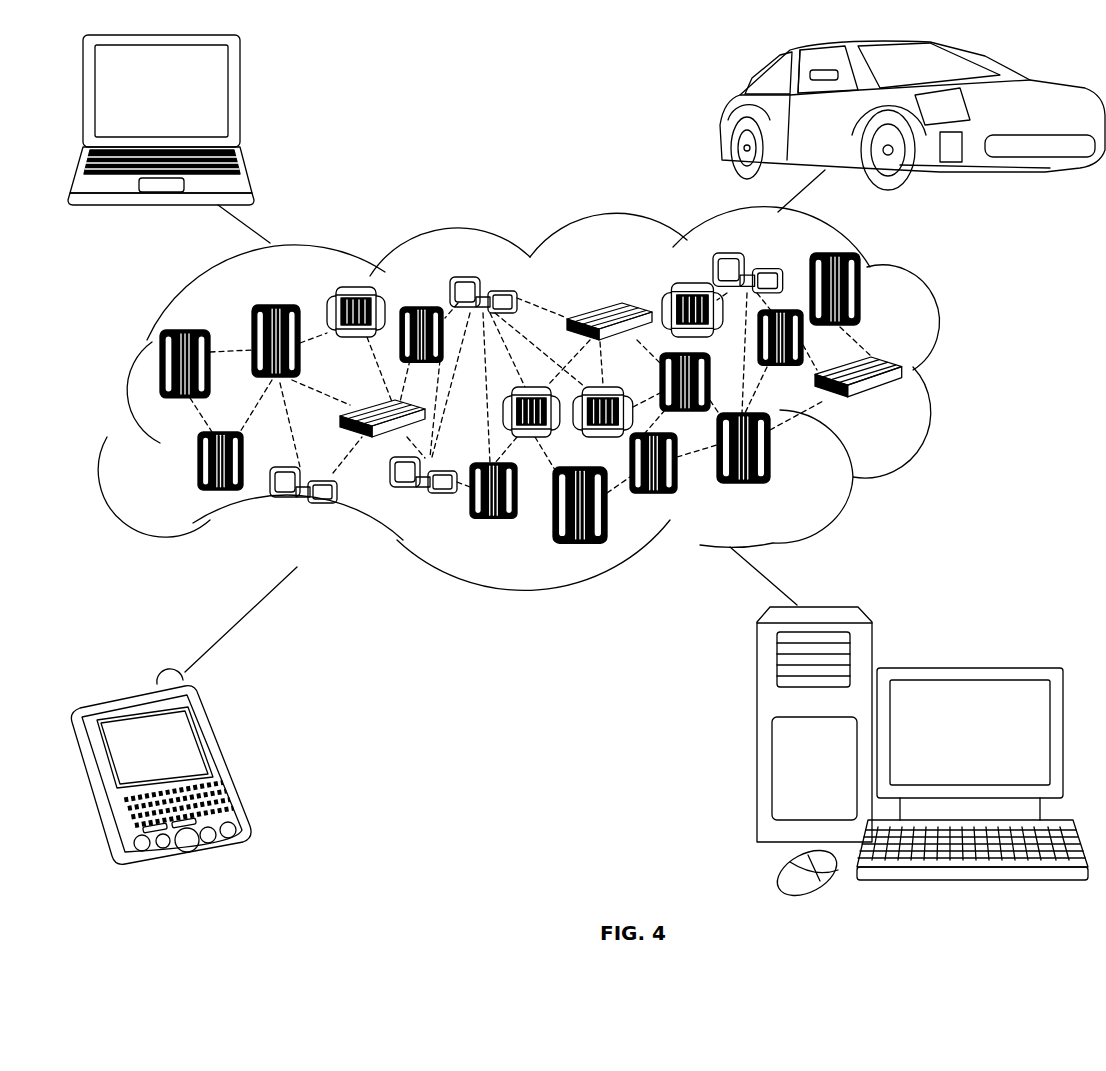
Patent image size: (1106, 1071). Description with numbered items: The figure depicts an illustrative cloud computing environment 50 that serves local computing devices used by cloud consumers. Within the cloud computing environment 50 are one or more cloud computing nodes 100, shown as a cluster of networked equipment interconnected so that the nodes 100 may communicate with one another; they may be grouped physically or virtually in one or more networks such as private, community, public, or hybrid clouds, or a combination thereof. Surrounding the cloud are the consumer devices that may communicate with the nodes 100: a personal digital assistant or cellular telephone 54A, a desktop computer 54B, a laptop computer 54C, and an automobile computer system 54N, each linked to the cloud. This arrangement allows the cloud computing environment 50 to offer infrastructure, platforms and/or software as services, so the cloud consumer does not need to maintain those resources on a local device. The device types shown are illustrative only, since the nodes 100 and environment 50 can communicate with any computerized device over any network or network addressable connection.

The cloud computing environment 50 is at (967, 373).
The cloud computing nodes 100 is at (903, 407).
The personal digital assistant or cellular telephone 54A is at (227, 760).
The desktop computer 54B is at (967, 667).
The laptop computer 54C is at (239, 99).
The automobile computer system 54N is at (725, 118).